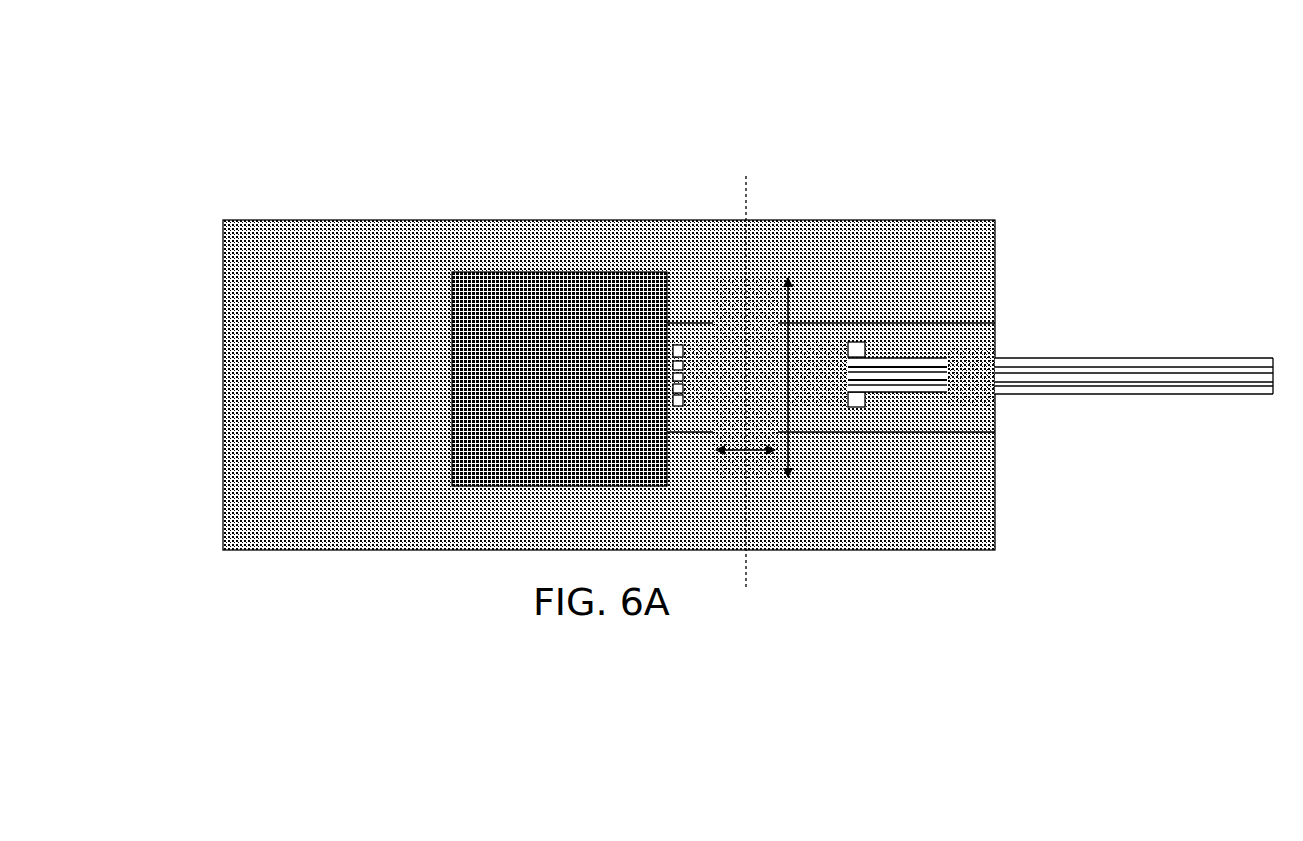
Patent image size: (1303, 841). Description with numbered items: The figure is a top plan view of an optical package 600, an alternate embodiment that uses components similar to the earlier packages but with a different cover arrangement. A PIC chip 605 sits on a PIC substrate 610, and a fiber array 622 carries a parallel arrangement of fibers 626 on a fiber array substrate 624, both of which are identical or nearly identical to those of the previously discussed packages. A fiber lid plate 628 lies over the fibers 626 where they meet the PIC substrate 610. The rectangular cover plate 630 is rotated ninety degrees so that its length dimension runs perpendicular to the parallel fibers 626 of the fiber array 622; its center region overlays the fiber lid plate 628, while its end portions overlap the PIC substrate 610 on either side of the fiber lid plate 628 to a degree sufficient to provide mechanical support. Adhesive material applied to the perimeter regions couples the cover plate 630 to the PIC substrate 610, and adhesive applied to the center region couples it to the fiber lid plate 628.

The optical package 600 is at (195, 102).
The PIC chip 605 is at (540, 297).
The PIC substrate 610 is at (408, 500).
The fiber array 622 is at (1118, 348).
The fiber array substrate 624 is at (858, 353).
The fibers 626 is at (937, 387).
The fiber lid plate 628 is at (820, 398).
The cover plate 630 is at (765, 303).